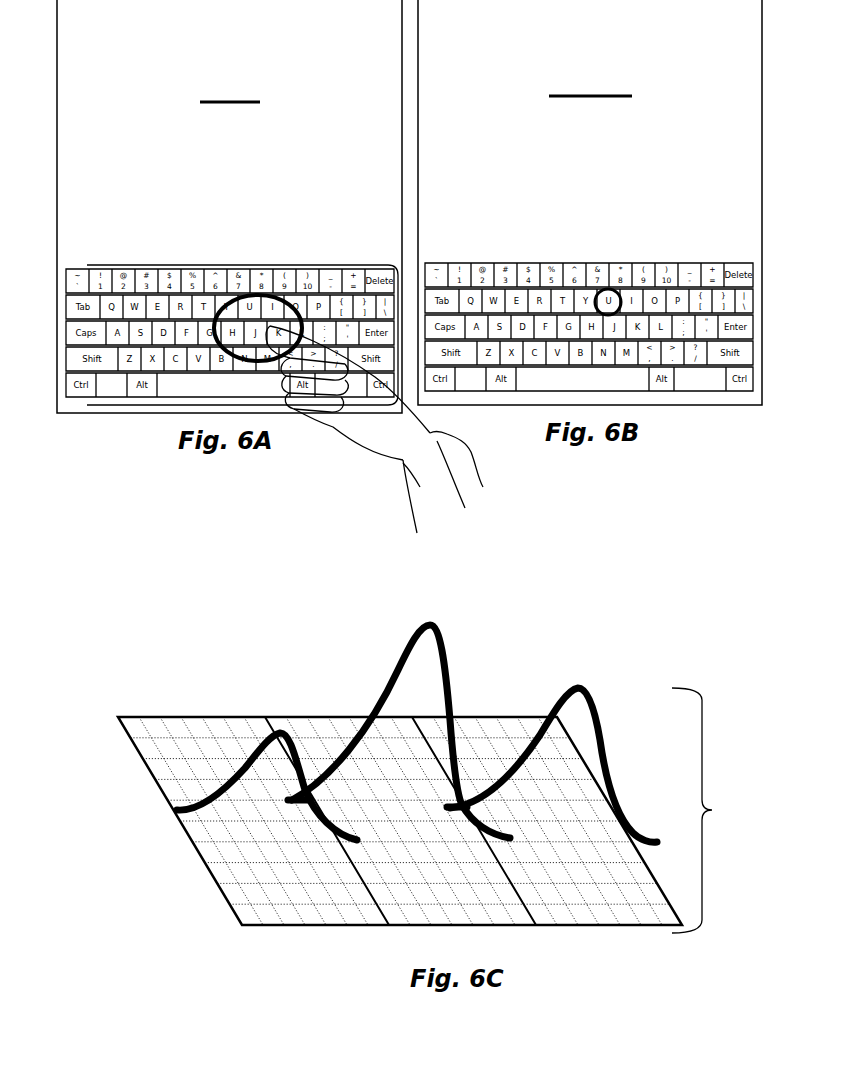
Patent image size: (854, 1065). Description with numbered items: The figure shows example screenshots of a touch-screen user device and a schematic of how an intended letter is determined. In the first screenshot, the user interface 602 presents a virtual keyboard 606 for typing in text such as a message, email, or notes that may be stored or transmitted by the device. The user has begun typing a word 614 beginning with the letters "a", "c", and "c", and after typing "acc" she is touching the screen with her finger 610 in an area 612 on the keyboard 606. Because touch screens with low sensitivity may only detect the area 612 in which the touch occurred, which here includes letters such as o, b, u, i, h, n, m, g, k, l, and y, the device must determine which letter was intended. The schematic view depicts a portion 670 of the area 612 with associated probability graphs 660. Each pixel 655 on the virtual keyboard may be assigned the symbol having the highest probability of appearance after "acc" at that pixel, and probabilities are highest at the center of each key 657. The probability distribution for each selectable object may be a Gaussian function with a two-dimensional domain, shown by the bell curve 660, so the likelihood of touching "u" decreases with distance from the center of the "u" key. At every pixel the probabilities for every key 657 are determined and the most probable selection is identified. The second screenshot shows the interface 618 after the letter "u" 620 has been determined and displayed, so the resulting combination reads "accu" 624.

In FIG. 6A, the user interface 602 is at (87, 50).
In FIG. 6A, the virtual keyboard 606 is at (87, 265).
In FIG. 6B, the virtual keyboard 606 is at (737, 256).
In FIG. 6A, the finger 610 is at (483, 487).
In FIG. 6A, the area 612 is at (276, 295).
In FIG. 6A, the word 614 is at (263, 90).
In FIG. 6B, the user interface 618 is at (730, 33).
In FIG. 6B, the letter "u" 620 is at (612, 289).
In FIG. 6B, the letter combination "accu" 624 is at (634, 83).
In FIG. 6C, the pixel 655 is at (140, 727).
In FIG. 6C, the key 657 is at (150, 772).
In FIG. 6C, the probability graph 660 is at (447, 643).
In FIG. 6C, the portion 670 is at (710, 810).